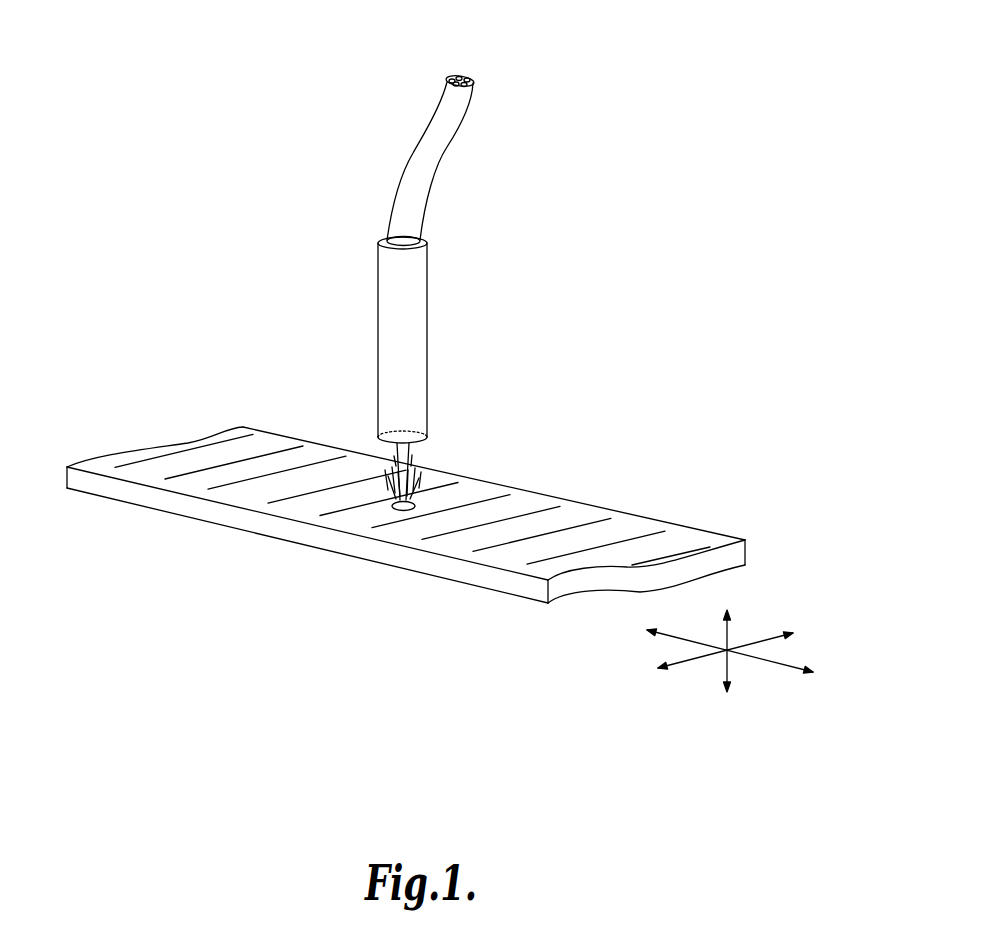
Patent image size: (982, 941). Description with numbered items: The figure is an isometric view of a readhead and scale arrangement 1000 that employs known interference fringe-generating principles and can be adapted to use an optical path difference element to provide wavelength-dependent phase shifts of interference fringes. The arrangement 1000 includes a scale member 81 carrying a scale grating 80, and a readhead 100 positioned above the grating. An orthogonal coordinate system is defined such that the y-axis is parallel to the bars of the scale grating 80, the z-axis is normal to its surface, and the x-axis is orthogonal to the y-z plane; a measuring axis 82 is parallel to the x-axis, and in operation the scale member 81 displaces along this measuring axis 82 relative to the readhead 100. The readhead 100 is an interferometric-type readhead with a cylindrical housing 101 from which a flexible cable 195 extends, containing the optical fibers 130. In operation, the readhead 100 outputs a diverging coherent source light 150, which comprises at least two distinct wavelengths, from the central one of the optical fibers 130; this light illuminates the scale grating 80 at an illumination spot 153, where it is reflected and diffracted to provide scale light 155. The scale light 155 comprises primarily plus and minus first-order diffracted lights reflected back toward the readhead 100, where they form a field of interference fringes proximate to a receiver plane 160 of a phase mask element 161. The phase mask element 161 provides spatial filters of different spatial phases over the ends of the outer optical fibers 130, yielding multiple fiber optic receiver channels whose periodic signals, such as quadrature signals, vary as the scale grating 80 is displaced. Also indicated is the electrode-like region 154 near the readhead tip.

The readhead and scale arrangement 1000 is at (632, 137).
The readhead 100 is at (375, 276).
The torch body 101 is at (427, 280).
The cable 195 is at (427, 123).
The optical fibers 130 is at (450, 72).
The source light 150 is at (433, 460).
The welding wire electrode 154 is at (420, 447).
The scale light 155 is at (424, 482).
The receiver plane 160 is at (397, 450).
The phase mask element 161 is at (392, 445).
The illumination spot 153 is at (402, 510).
The scale grating 80 is at (531, 529).
The scale member 81 is at (685, 527).
The measuring axis 82 is at (753, 640).